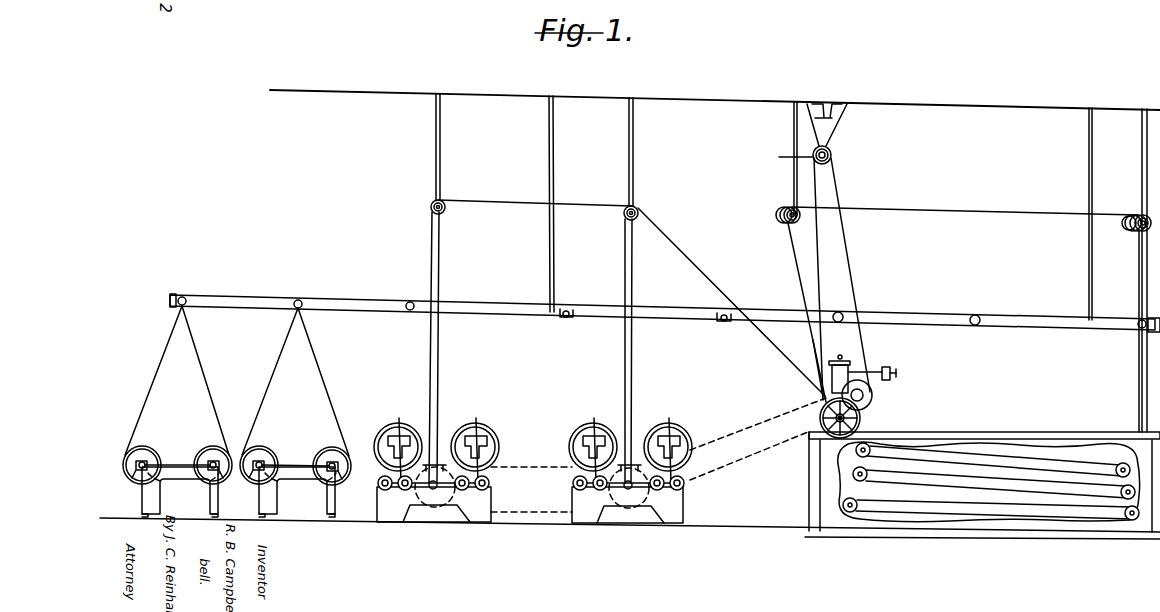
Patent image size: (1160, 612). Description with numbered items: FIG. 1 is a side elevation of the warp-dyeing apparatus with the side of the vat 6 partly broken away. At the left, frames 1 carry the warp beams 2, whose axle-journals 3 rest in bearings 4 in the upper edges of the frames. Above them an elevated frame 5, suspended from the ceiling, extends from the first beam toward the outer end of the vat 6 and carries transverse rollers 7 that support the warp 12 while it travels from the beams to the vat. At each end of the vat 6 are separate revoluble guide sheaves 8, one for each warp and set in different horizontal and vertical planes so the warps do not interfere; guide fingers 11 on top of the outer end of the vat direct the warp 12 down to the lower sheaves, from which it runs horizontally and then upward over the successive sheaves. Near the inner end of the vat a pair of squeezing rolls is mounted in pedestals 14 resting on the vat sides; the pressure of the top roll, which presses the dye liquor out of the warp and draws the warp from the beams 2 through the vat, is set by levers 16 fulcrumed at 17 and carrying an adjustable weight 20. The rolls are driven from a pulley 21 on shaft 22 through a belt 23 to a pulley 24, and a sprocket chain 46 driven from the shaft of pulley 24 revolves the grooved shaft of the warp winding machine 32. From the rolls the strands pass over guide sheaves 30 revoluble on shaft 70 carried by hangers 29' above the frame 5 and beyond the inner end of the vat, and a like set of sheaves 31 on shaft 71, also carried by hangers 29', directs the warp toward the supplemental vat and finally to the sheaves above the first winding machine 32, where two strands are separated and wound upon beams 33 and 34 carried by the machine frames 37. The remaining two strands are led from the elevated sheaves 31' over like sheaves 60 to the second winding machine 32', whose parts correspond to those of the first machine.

The frames 1 is at (239, 492).
The warp beams 2 is at (150, 452).
The axle-journals 3 is at (150, 465).
The bearings 4 is at (136, 476).
The elevated frame 5 is at (362, 310).
The vat 6 is at (808, 488).
The transverse rollers 7 is at (184, 298).
The revoluble guide sheaves 8 is at (1125, 513).
The guide fingers 11 is at (1140, 432).
The warp 12 is at (207, 398).
The pedestals 14 is at (816, 368).
The levers 16 is at (870, 372).
The fulcrum 17 is at (566, 505).
The weight 20 is at (891, 381).
The pulley 21 is at (832, 156).
The shaft 22 is at (785, 159).
The belt 23 is at (841, 191).
The pulley 24 is at (861, 411).
The hangers 29' is at (954, 267).
The guide sheaves 30 is at (777, 214).
The sheaves 31 is at (1129, 210).
The elevated sheaves 31' is at (646, 201).
The warp winding machine 32 is at (531, 509).
The second winding machine 32' is at (436, 510).
The beam 33 is at (487, 427).
The beam 34 is at (394, 424).
The sides or frames of the machines 37 is at (390, 500).
The sprocket chain 46 is at (772, 420).
The sheaves 60 is at (431, 205).
The shaft 70 is at (786, 226).
The shaft 71 is at (1137, 237).